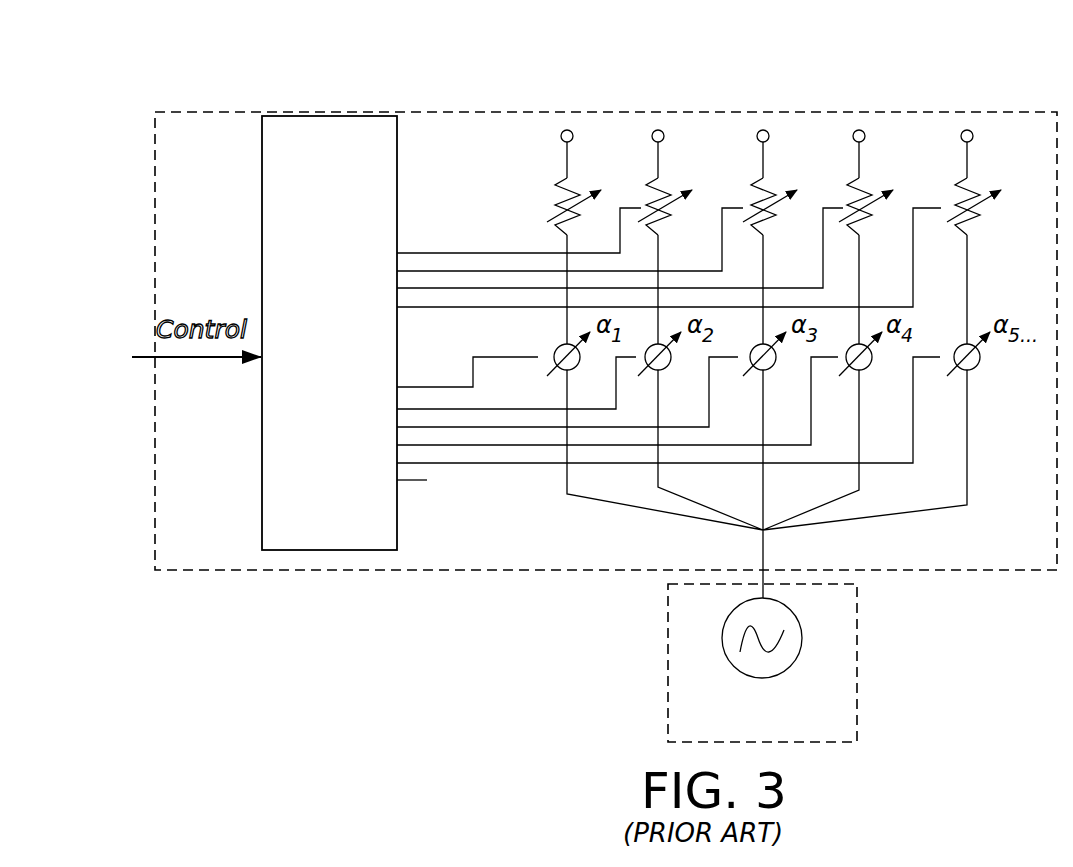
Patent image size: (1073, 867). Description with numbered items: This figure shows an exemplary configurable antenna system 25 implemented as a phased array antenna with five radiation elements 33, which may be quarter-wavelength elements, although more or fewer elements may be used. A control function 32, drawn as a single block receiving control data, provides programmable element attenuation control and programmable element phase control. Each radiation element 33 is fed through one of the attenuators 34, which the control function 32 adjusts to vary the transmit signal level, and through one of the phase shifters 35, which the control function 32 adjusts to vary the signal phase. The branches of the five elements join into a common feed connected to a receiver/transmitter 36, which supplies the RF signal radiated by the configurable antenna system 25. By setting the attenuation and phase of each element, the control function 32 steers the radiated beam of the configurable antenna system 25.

The configurable antenna system 25 is at (958, 112).
The control function 32 is at (397, 163).
The radiation elements 33 is at (566, 161).
The attenuators 34 is at (558, 200).
The phase shifters 35 is at (553, 346).
The receiver/transmitter 36 is at (857, 645).